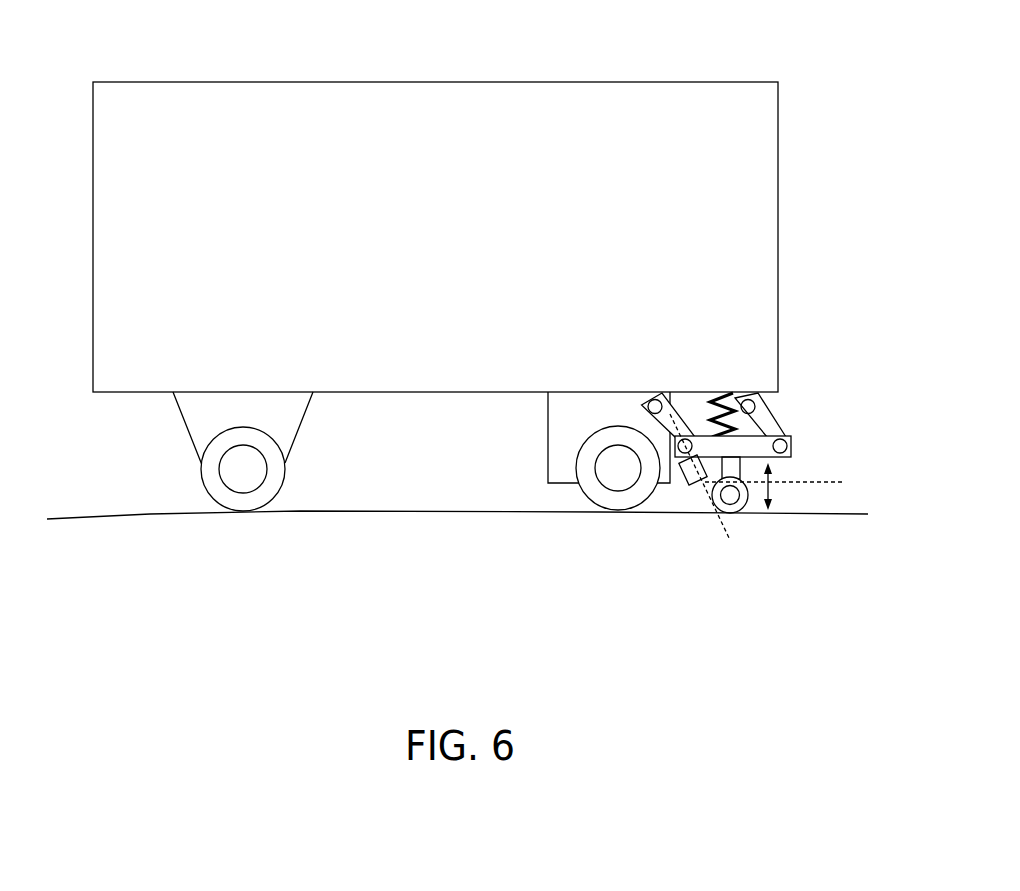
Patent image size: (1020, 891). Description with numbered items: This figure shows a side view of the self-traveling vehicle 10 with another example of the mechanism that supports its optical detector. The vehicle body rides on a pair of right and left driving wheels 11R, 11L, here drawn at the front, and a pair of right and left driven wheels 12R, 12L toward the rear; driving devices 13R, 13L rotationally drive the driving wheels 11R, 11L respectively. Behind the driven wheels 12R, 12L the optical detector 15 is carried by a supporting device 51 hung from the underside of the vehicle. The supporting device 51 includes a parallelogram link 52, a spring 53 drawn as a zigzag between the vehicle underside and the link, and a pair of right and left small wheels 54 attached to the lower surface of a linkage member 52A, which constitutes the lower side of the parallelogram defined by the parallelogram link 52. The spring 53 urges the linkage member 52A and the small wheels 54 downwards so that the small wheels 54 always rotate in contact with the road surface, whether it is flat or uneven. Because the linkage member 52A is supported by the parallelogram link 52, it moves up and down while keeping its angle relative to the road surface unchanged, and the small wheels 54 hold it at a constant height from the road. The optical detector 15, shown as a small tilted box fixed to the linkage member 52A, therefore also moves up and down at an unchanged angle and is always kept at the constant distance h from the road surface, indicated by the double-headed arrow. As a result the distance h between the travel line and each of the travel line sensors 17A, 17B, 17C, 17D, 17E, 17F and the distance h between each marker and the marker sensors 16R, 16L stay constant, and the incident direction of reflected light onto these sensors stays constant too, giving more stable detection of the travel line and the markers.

The self-traveling vehicle 10 is at (402, 72).
The right driving wheel 11R is at (225, 483).
The left driving wheel 11L is at (207, 492).
The right driven wheel 12R is at (579, 504).
The left driven wheel 12L is at (585, 505).
The right driving device 13R is at (542, 440).
The left driving device 13L is at (546, 441).
The optical detector 15 is at (740, 554).
The right marker sensor 16R is at (740, 554).
The left marker sensor 16L is at (740, 554).
The travel line sensor 17A is at (740, 554).
The travel line sensor 17B is at (740, 554).
The travel line sensor 17C is at (740, 554).
The travel line sensor 17D is at (740, 554).
The travel line sensor 17E is at (740, 554).
The travel line sensor 17F is at (691, 496).
The supporting device 51 is at (722, 451).
The parallelogram link 52 is at (638, 410).
The linkage member 52A is at (692, 436).
The spring 53 is at (732, 402).
The small wheel 54 is at (750, 507).
The constant distance h is at (818, 515).